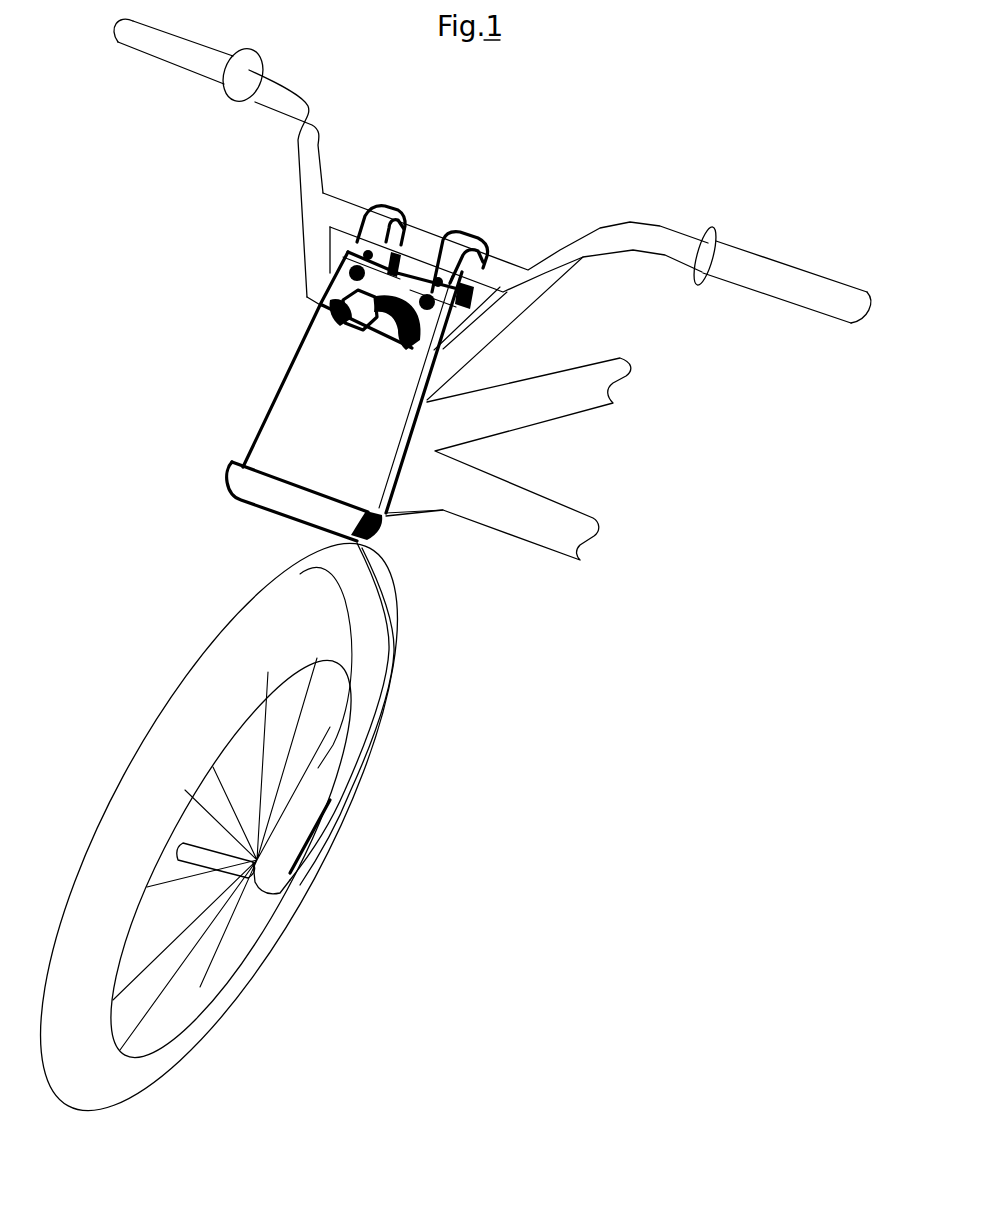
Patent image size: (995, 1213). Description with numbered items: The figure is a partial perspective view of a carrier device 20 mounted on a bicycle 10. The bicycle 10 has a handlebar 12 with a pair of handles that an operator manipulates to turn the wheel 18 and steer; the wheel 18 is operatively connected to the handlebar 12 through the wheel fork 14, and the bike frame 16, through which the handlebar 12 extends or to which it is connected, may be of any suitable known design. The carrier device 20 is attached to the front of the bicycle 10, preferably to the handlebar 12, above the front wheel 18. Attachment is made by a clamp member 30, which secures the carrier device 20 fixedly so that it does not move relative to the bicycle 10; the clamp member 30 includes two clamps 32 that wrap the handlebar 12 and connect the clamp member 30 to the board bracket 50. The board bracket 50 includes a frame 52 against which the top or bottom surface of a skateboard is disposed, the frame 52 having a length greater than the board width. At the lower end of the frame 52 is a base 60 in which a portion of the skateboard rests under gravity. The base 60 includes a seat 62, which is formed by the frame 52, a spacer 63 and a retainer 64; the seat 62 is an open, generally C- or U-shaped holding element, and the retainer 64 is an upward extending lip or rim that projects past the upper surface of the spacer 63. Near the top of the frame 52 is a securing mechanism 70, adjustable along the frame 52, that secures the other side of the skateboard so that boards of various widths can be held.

The bicycle 10 is at (621, 222).
The handlebar 12 is at (528, 272).
The wheel fork 14 is at (229, 617).
The bike frame 16 is at (578, 368).
The wheel 18 is at (163, 724).
The carrier device 20 is at (276, 362).
The clamp member 30 is at (385, 205).
The clamp 32 is at (390, 232).
The board bracket 50 is at (258, 429).
The frame 52 is at (355, 419).
The base 60 is at (231, 476).
The seat 62 is at (385, 522).
The spacer 63 is at (360, 543).
The retainer 64 is at (267, 487).
The securing mechanism 70 is at (314, 303).